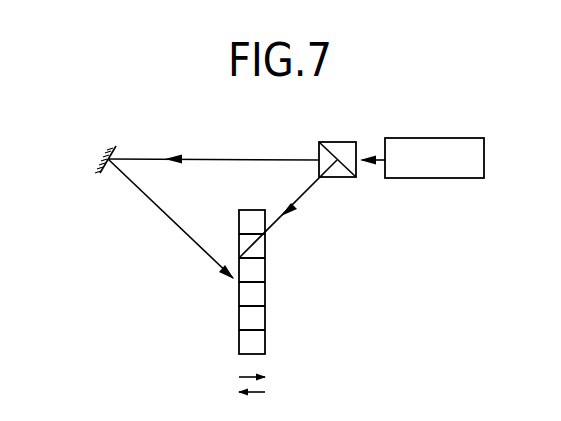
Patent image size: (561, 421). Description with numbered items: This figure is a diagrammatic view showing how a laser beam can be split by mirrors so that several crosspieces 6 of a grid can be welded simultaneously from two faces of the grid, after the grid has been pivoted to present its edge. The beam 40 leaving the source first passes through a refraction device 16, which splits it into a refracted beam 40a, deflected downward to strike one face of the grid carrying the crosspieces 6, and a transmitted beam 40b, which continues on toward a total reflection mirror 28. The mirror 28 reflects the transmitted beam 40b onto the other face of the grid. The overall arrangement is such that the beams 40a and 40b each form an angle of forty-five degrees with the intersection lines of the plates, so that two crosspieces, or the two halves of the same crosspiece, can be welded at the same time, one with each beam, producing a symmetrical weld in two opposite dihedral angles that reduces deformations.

The crosspieces 6 is at (252, 309).
The refraction device 16 is at (333, 146).
The total reflection mirror 28 is at (108, 148).
The beam 40 is at (376, 165).
The refracted beam 40a is at (309, 188).
The transmitted beam 40b is at (219, 157).